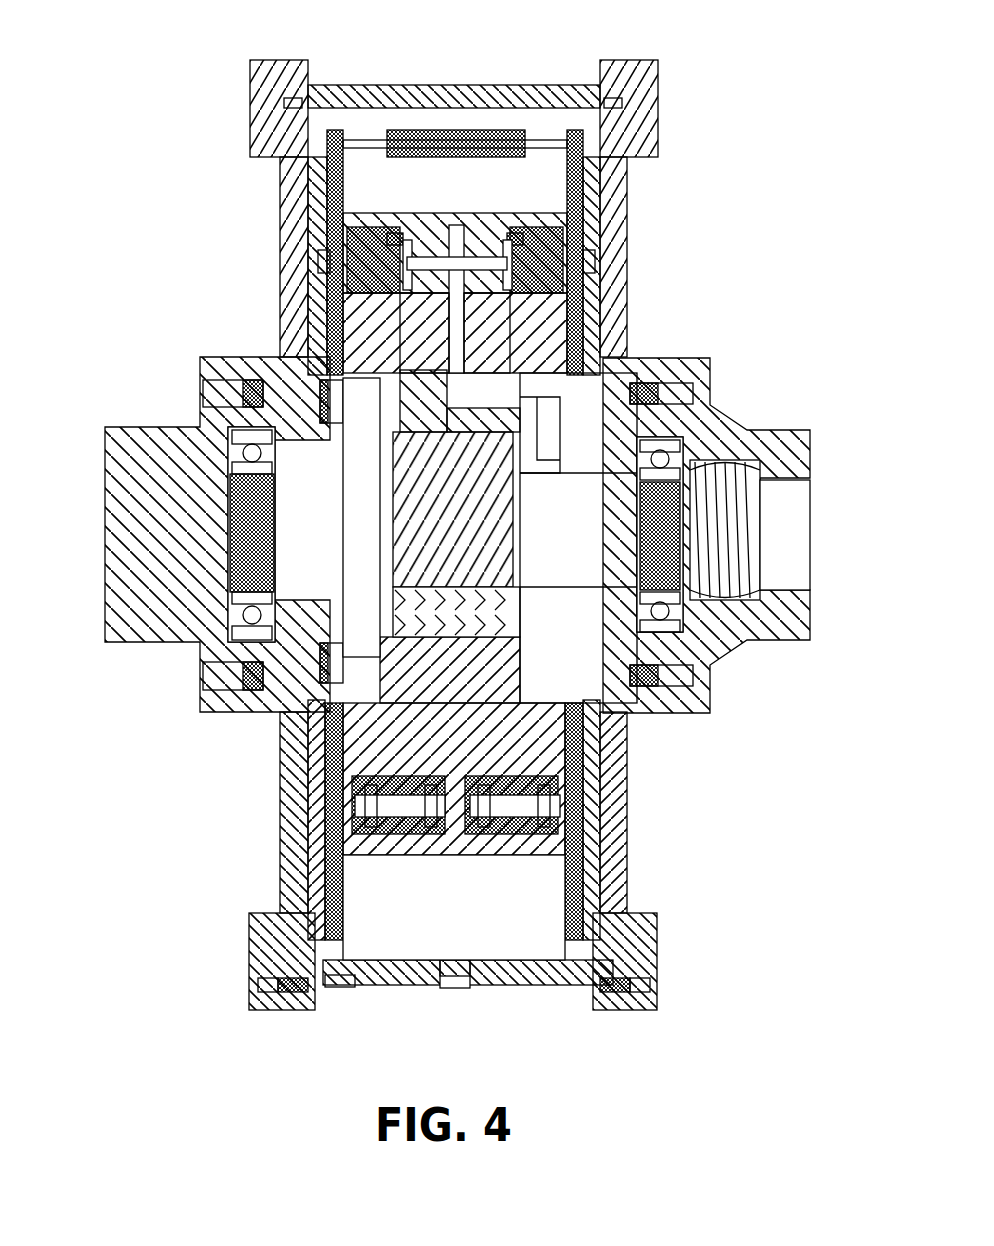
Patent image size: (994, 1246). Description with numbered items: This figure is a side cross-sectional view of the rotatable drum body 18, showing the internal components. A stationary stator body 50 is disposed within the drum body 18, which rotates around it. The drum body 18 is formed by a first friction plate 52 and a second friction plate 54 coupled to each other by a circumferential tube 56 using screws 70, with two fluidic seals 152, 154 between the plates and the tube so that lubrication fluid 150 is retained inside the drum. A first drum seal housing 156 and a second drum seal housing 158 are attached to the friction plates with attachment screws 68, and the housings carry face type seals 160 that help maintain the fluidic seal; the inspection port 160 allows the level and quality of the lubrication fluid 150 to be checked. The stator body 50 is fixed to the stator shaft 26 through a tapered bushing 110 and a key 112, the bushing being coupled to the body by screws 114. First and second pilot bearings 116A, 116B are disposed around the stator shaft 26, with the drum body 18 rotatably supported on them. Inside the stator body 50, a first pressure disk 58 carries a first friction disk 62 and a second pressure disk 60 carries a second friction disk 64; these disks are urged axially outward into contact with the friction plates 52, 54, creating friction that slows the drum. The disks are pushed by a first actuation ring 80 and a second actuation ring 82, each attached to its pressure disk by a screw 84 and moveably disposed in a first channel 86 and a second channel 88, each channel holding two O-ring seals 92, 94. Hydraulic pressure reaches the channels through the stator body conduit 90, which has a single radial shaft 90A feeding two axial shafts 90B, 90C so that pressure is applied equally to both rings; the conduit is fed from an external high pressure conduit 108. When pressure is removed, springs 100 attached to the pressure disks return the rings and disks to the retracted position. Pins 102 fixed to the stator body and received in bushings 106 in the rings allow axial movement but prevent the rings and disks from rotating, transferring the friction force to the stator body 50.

The rotatable drum body 18 is at (148, 155).
The stator shaft 26 is at (305, 588).
The stator body 50 is at (452, 882).
The first friction plate 52 is at (290, 920).
The second friction plate 54 is at (635, 890).
The circumferential body (tube) 56 is at (365, 988).
The first pressure disk 58 is at (345, 915).
The second pressure disk 60 is at (575, 900).
The first friction disk 62 is at (318, 860).
The second friction disk 64 is at (590, 872).
The attachment screws 68 is at (215, 395).
The screws 70 is at (268, 985).
The first actuation ring 80 is at (360, 250).
The second actuation ring 82 is at (560, 250).
The screw 84 is at (345, 262).
The first channel 86 is at (395, 240).
The second channel 88 is at (518, 240).
The stator body hydraulic pressure conduit 90 is at (470, 345).
The radial shaft 90A is at (447, 367).
The first axial shaft 90B is at (430, 270).
The second axial shaft 90C is at (487, 300).
The seal 92 is at (378, 235).
The seal 94 is at (380, 298).
The spring 100 is at (420, 132).
The pins 102 is at (490, 790).
The bushings 106 is at (520, 825).
The external conduit 108 is at (563, 455).
The tapered bushing 110 is at (360, 560).
The key 112 is at (535, 590).
The screws 114 is at (333, 400).
The first bearing (pilot bearing) 116A is at (248, 458).
The second bearing (pilot bearing) 116B is at (700, 455).
The lubrication fluid 150 is at (497, 952).
The fluidic seal (O ring) 152 is at (280, 103).
The fluidic seal (O ring) 154 is at (295, 100).
The first drum seal housing 156 is at (165, 638).
The second drum seal housing 158 is at (748, 640).
The seal / inspection port 160 is at (775, 605).